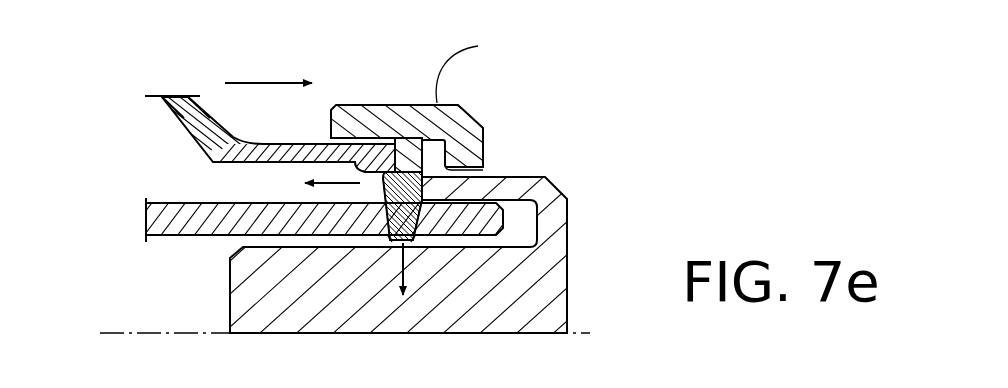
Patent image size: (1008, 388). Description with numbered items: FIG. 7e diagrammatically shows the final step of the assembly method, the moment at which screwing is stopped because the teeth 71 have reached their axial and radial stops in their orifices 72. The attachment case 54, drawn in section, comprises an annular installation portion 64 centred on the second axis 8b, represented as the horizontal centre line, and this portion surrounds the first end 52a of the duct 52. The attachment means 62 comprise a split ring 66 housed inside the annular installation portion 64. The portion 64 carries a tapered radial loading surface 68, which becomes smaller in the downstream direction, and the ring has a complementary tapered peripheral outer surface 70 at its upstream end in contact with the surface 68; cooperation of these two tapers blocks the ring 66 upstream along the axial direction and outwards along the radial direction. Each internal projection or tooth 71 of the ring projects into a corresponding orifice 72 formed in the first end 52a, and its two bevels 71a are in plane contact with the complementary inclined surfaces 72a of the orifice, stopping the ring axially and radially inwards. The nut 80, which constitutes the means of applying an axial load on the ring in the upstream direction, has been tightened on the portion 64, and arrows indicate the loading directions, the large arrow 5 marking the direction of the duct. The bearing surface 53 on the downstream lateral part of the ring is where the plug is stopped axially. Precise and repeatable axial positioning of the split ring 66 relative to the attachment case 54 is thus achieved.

The insertion direction arrow 5 is at (248, 83).
The attachment case 54 is at (165, 92).
The annular installation portion 64 is at (365, 143).
The tapered peripheral outer surface 70 is at (423, 103).
The nut 80 is at (437, 102).
The attachment means 62 is at (512, 75).
The radial loading surface 68 is at (378, 178).
The split ring 66 is at (447, 170).
The internal projection 71 is at (425, 178).
The bevel 71a is at (387, 212).
The duct 52 is at (222, 240).
The first end of the duct 52a is at (205, 218).
The second axis 8b is at (100, 332).
The orifice 72 is at (383, 243).
The inclined surface 72a is at (397, 243).
The bearing surface 53 is at (401, 255).